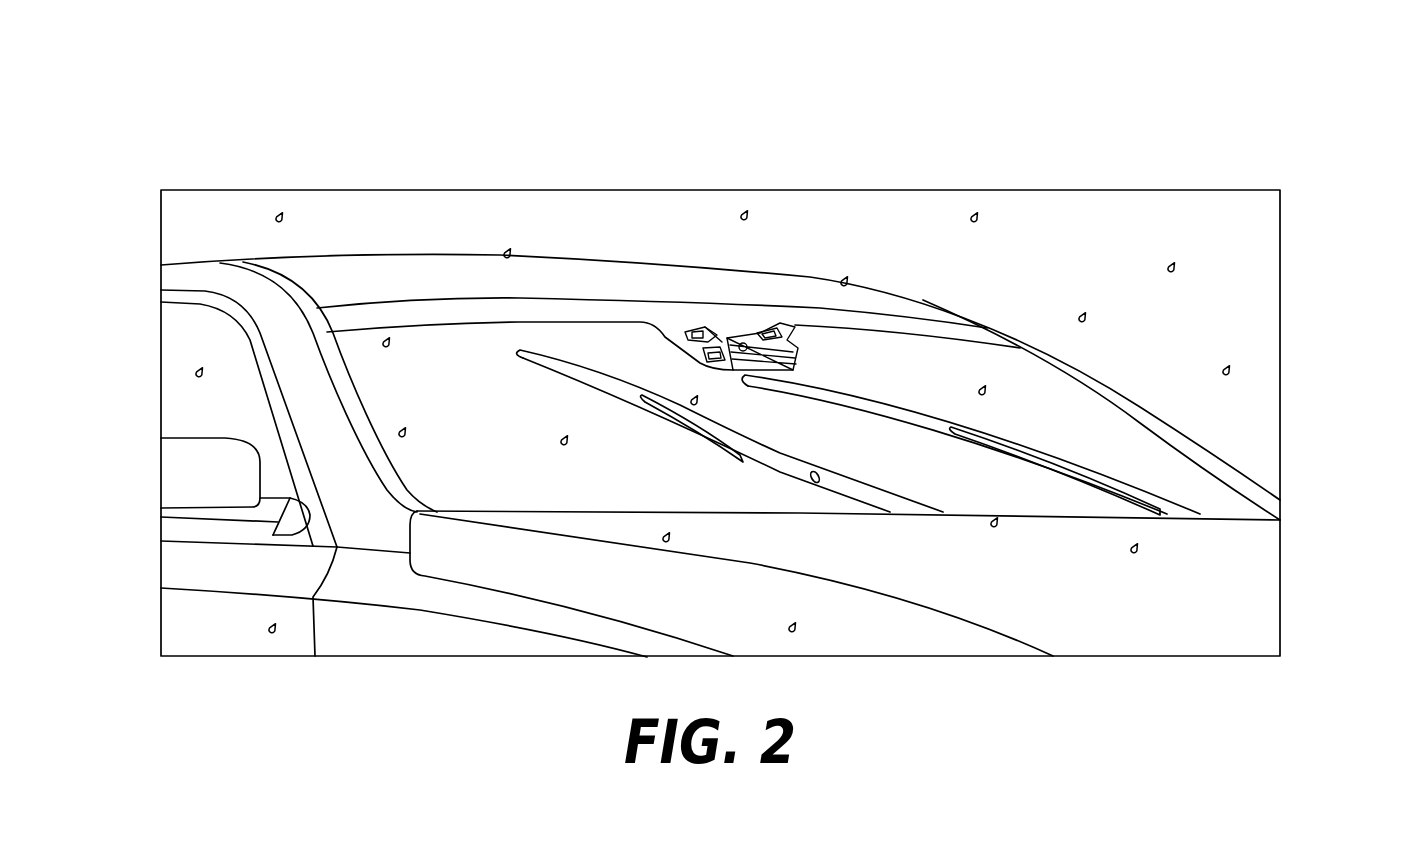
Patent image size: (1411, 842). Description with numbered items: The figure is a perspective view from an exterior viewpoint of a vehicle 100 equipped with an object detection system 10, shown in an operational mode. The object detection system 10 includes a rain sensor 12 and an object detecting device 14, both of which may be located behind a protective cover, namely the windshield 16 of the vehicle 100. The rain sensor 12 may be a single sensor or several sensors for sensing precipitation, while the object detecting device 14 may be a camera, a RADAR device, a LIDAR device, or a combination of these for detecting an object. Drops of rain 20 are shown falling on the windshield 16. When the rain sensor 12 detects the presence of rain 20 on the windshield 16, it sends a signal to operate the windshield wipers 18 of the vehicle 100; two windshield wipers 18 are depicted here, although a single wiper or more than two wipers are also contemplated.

The object detection system 10 is at (1227, 104).
The rain sensor 12 is at (767, 313).
The object detecting device 14 is at (737, 320).
The windshield 16 is at (1095, 407).
The windshield wipers 18 is at (548, 393).
The rain 20 is at (1043, 270).
The vehicle 100 is at (1242, 572).